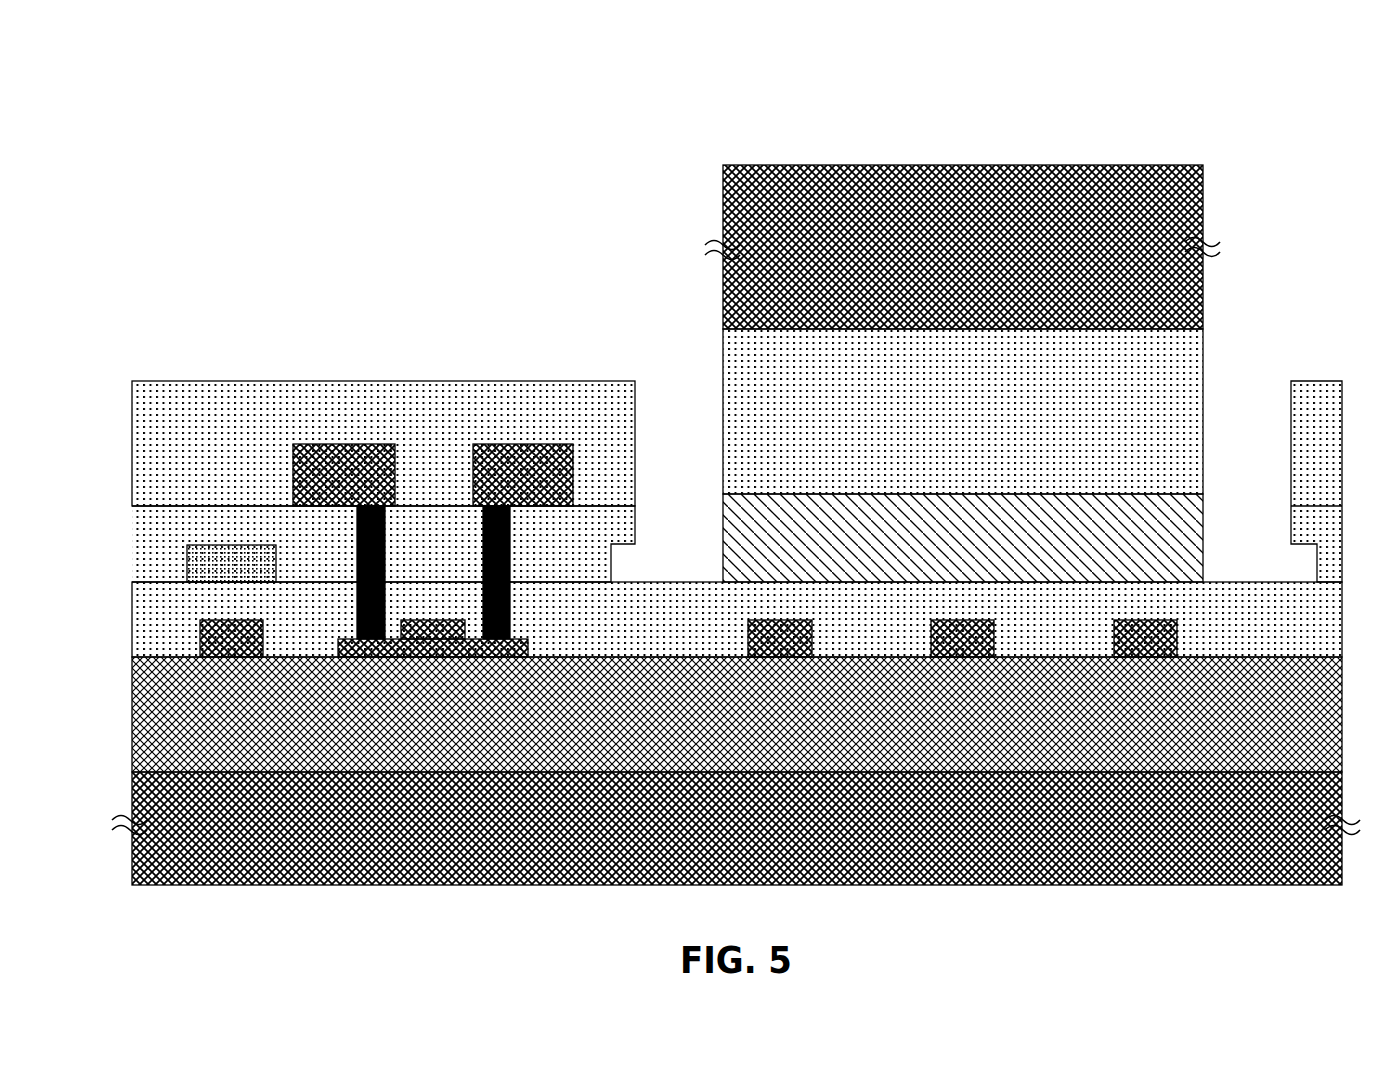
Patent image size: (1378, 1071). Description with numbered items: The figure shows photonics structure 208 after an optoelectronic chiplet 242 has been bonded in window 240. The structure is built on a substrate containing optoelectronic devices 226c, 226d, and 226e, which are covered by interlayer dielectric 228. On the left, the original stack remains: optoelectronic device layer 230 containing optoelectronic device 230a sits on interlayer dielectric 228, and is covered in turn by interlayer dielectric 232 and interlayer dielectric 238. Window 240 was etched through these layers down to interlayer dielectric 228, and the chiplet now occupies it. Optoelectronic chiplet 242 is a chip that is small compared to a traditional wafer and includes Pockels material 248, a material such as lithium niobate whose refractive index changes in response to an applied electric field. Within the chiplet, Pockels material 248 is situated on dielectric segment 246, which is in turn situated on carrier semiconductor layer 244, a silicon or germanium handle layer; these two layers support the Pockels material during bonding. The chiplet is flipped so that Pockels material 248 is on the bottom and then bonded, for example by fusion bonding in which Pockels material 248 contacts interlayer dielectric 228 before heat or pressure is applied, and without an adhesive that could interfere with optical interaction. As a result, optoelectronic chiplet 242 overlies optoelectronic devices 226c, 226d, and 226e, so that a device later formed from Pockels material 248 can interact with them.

The photonics structure 208 is at (718, 469).
The optoelectronic device 226c is at (812, 640).
The optoelectronic device 226d is at (994, 640).
The optoelectronic device 226e is at (1177, 640).
The interlayer dielectric 228 is at (148, 604).
The optoelectronic device layer 230 is at (342, 563).
The optoelectronic device 230a is at (260, 562).
The interlayer dielectric 232 is at (148, 528).
The interlayer dielectric 238 is at (148, 408).
The window 240 is at (365, 468).
The optoelectronic chiplet 242 is at (942, 342).
The carrier semiconductor layer 244 is at (740, 205).
The dielectric segment 246 is at (740, 412).
The Pockels material 248 is at (723, 543).